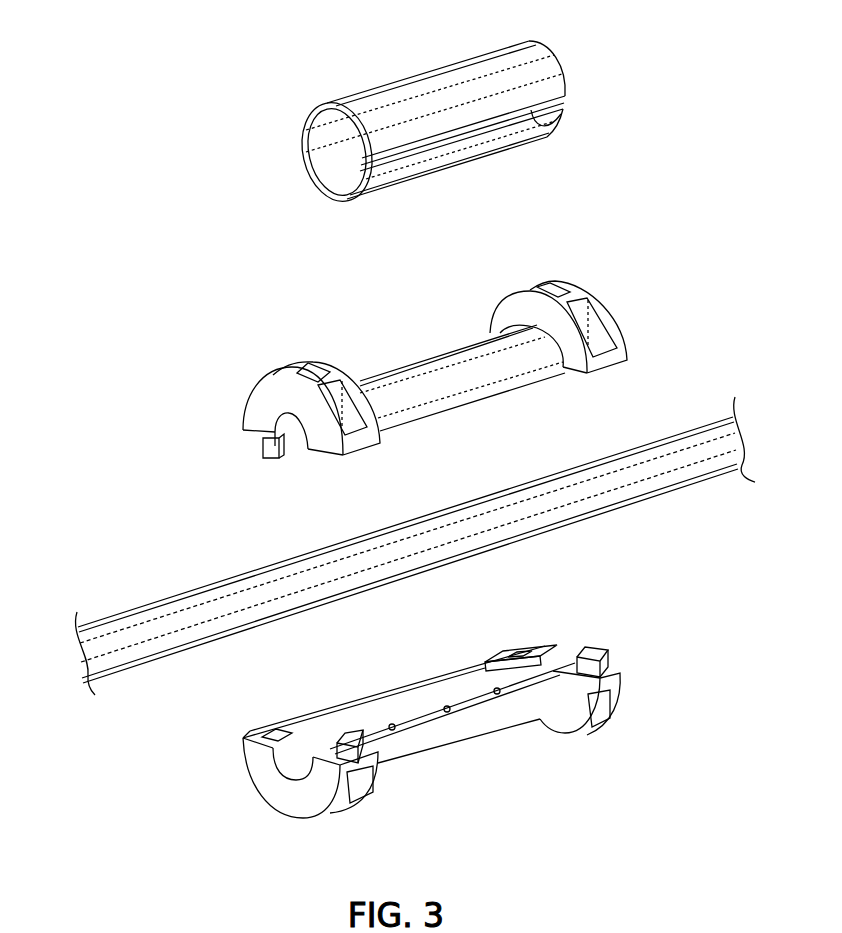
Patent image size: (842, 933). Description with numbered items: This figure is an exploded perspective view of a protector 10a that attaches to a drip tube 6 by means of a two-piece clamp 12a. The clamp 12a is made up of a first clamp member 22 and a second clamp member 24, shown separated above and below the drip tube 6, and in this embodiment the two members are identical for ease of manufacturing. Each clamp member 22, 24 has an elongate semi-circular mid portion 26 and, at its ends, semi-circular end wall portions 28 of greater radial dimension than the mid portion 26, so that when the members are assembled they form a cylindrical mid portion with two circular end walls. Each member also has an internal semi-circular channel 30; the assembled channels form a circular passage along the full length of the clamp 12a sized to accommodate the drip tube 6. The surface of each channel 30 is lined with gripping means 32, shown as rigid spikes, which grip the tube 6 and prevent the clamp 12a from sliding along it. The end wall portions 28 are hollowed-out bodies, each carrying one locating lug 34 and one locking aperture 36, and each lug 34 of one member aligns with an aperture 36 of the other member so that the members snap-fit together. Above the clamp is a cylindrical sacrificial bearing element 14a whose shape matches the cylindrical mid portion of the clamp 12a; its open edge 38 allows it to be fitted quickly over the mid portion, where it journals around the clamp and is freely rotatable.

The protector 10a is at (192, 182).
The two-piece clamp 12a is at (238, 358).
The sacrificial bearing element 14a is at (433, 64).
The open edge 38 is at (541, 134).
The first clamp member 22 is at (587, 288).
The second clamp member 24 is at (628, 678).
The elongate semi-circular mid portion 26 is at (410, 380).
The semi-circular end wall portions 28 is at (528, 300).
The internal semi-circular channel 30 is at (279, 462).
The gripping means 32 is at (391, 722).
The locating lug 34 is at (258, 438).
The locking aperture 36 is at (352, 386).
The drip tube 6 is at (120, 614).